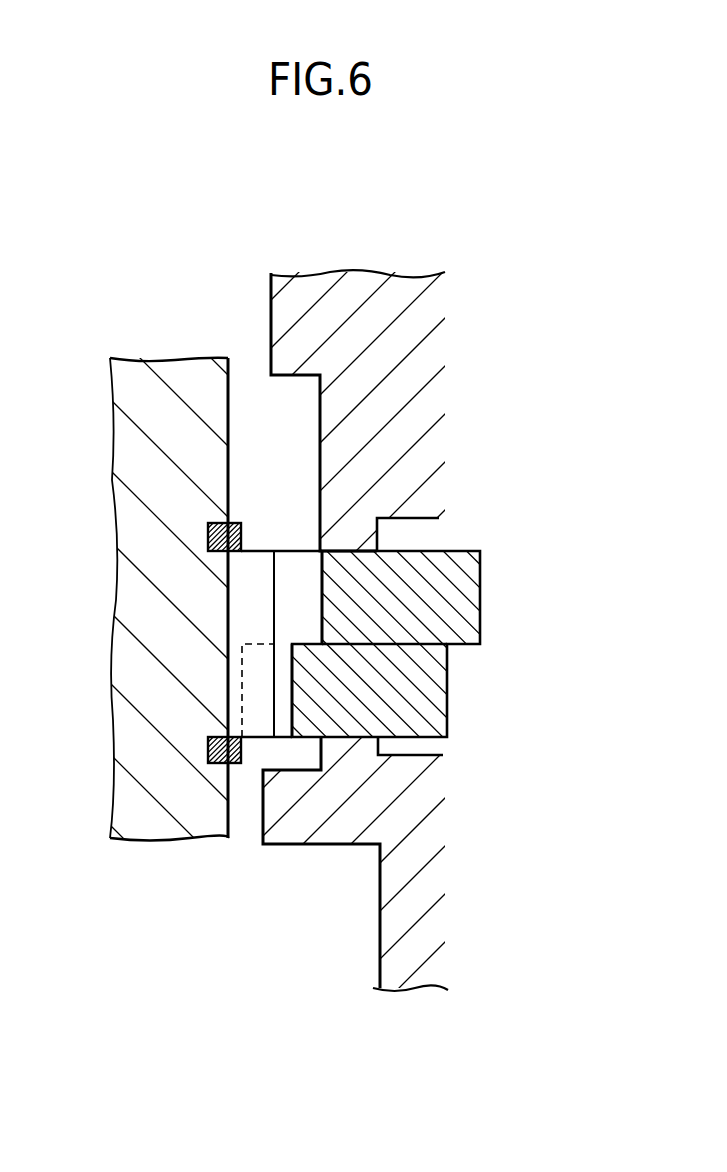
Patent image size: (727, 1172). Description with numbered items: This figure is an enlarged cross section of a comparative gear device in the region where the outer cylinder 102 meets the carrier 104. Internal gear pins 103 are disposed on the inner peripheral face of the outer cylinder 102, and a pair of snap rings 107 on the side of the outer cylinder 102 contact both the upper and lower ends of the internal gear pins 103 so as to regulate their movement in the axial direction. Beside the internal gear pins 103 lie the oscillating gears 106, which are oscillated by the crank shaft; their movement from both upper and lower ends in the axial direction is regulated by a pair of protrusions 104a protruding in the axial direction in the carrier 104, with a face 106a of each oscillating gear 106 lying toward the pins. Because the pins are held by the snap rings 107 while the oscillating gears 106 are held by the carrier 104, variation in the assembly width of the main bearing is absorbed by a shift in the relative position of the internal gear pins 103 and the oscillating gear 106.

The outer cylinder 102 is at (128, 447).
The internal gear pins 103 is at (240, 578).
The carrier 104 is at (352, 257).
The protrusions 104a is at (357, 535).
The oscillating gear 106 is at (410, 673).
The contact surface of elastic block 106a is at (306, 600).
The snap rings 107 is at (207, 533).